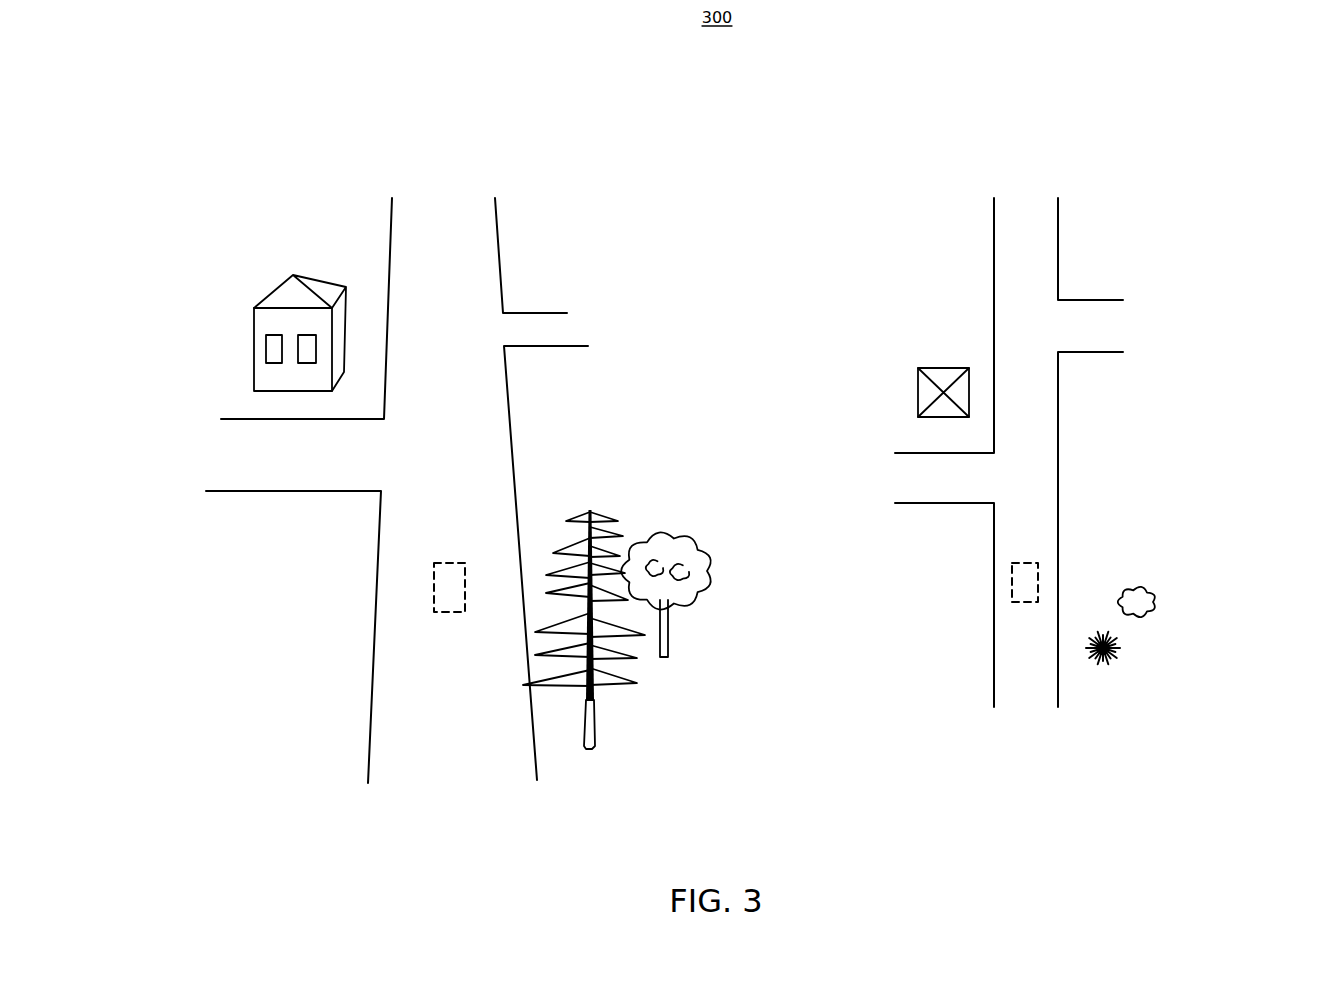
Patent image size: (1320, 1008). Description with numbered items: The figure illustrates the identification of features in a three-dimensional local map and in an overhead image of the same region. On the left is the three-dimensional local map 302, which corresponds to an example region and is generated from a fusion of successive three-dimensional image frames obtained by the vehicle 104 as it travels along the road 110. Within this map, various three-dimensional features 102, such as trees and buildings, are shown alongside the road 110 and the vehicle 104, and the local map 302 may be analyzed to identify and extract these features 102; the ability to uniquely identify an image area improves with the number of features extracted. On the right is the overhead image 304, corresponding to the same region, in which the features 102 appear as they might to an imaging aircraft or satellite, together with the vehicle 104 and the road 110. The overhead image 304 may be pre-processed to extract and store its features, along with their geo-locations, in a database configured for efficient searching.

The 3-D local map 302 is at (310, 168).
The overhead image 304 is at (926, 168).
The 3-D features 102 is at (235, 302).
The vehicle 104 is at (455, 562).
The road 110 is at (370, 720).